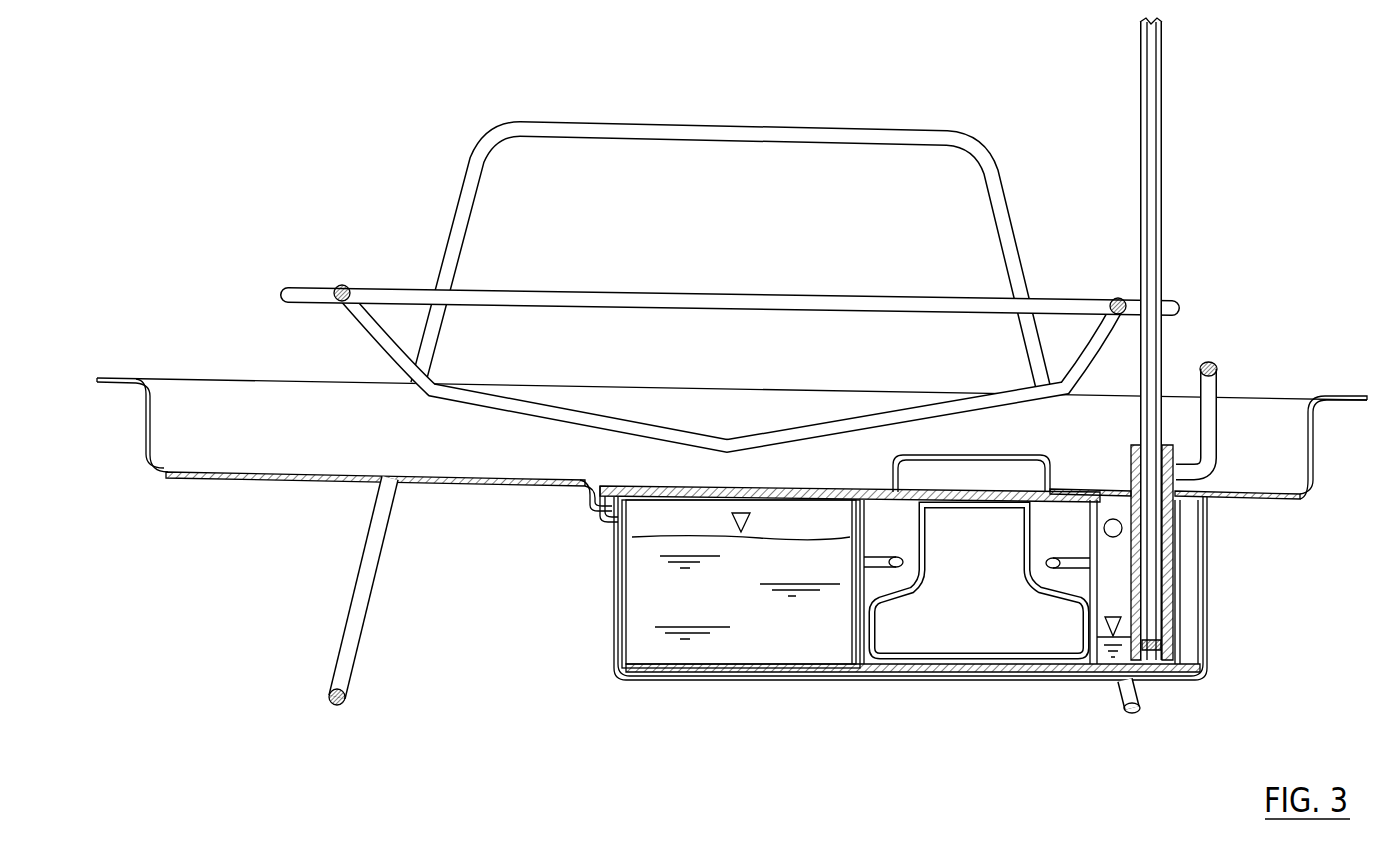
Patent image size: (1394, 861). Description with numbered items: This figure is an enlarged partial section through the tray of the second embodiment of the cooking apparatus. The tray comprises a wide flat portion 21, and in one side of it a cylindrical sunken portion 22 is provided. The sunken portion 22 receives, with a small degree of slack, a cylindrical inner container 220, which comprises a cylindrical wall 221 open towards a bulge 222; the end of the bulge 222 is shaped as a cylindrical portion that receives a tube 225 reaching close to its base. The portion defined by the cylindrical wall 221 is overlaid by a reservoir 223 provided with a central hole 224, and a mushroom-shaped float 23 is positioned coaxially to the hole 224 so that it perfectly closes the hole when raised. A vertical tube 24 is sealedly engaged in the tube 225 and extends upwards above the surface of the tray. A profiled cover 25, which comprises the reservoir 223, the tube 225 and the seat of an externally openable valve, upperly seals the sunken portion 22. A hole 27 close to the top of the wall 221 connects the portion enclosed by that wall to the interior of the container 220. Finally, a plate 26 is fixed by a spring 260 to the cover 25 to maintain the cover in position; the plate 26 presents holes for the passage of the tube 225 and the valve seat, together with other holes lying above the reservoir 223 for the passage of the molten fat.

The wide flat portion 21 is at (250, 473).
The sunken portion 22 is at (620, 598).
The mushroom-shaped float 23 is at (955, 575).
The vertical tube 24 is at (1153, 352).
The cover 25 is at (590, 502).
The plate 26 is at (1092, 468).
The hole 27 is at (1122, 528).
The inner container 220 is at (625, 650).
The cylindrical wall 221 is at (837, 617).
The bulge 222 is at (1175, 622).
The reservoir 223 is at (908, 535).
The central hole 224 is at (912, 567).
The tube 225 is at (1116, 574).
The spring 260 is at (880, 450).